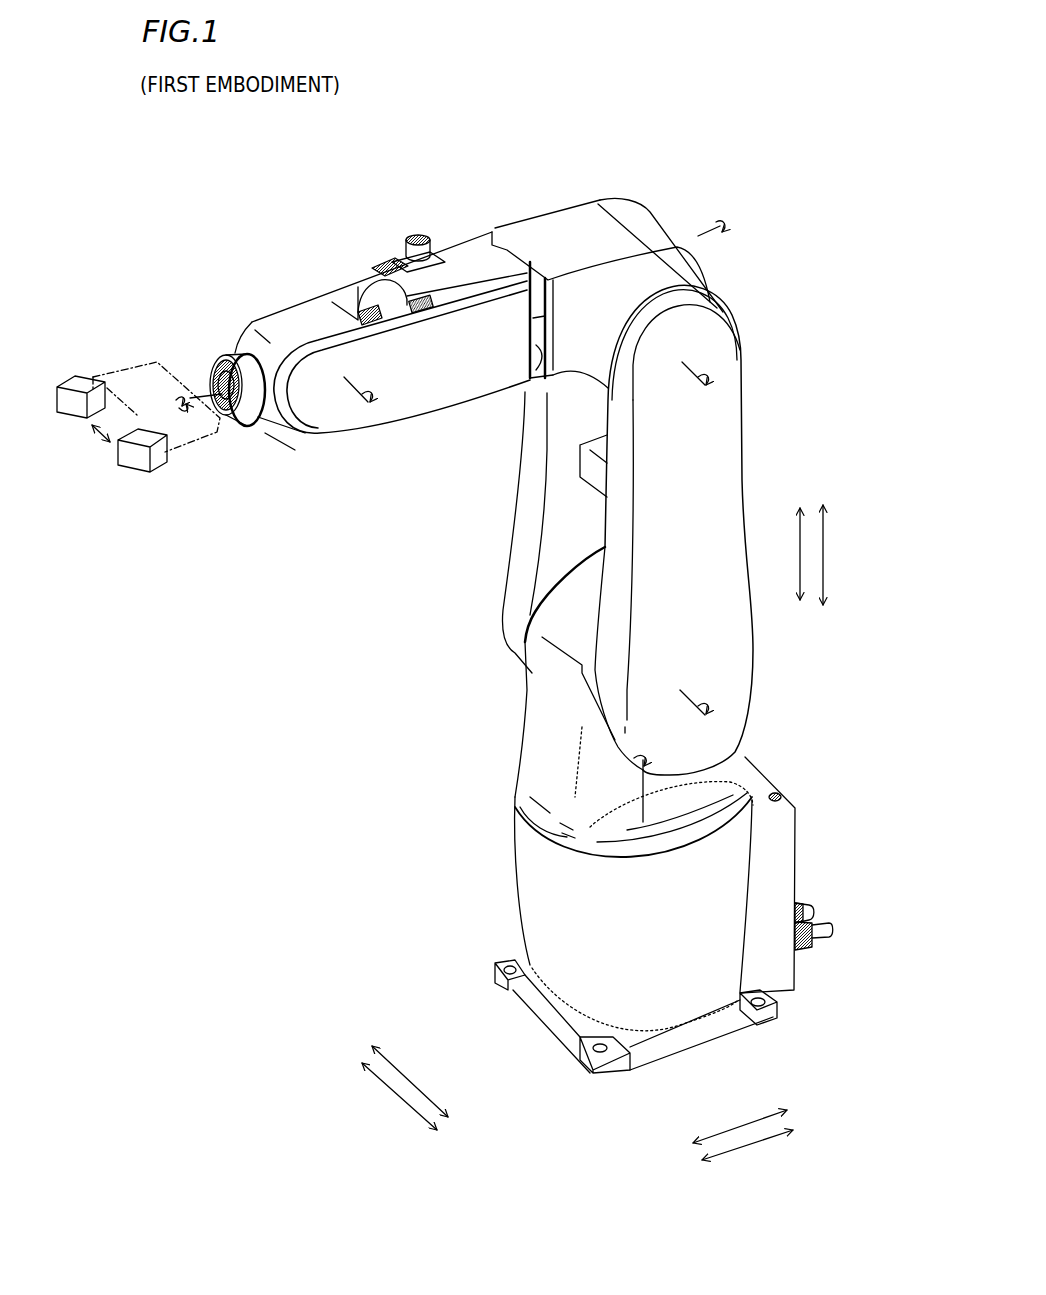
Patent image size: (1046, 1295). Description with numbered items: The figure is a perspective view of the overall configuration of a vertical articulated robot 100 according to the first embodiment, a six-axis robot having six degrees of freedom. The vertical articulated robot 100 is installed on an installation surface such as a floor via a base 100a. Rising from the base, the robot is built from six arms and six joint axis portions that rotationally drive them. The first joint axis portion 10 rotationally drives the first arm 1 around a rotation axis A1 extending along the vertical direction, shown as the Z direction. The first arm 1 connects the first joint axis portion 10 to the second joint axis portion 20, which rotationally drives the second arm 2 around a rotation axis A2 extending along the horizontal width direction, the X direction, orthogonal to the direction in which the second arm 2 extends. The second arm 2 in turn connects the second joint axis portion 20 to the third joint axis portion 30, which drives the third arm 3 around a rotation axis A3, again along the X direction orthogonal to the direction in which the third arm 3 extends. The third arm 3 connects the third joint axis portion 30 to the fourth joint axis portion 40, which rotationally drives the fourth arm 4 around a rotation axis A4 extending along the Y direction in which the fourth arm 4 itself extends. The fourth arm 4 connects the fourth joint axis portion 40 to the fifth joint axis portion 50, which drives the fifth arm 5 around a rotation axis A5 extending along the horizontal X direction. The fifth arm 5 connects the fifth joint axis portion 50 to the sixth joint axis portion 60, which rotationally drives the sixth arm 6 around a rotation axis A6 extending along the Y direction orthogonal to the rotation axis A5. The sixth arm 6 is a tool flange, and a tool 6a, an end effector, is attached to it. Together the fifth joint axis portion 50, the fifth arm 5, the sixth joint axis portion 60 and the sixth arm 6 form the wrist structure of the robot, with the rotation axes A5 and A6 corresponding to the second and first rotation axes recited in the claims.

The vertical articulated robot 100 is at (745, 133).
The base 100a is at (506, 950).
The first joint axis portion 10 is at (504, 798).
The first arm 1 is at (518, 724).
The second arm 2 is at (505, 530).
The second joint axis portion 20 is at (491, 616).
The third arm 3 is at (563, 201).
The third joint axis portion 30 is at (729, 293).
The fourth arm 4 is at (455, 234).
The fourth joint axis portion 40 is at (495, 221).
The fifth arm 5 is at (306, 318).
The fifth joint axis portion 50 is at (277, 293).
The sixth arm 6 is at (233, 432).
The sixth joint axis portion 60 is at (258, 432).
The tool 6a is at (133, 366).
The rotation axis A1 is at (639, 774).
The rotation axis A2 is at (707, 716).
The rotation axis A3 is at (708, 386).
The rotation axis A4 is at (728, 220).
The rotation axis A5 is at (368, 399).
The rotation axis A6 is at (179, 409).
The X direction X is at (406, 1087).
The Y direction Y is at (743, 1134).
The Z direction Z is at (809, 555).